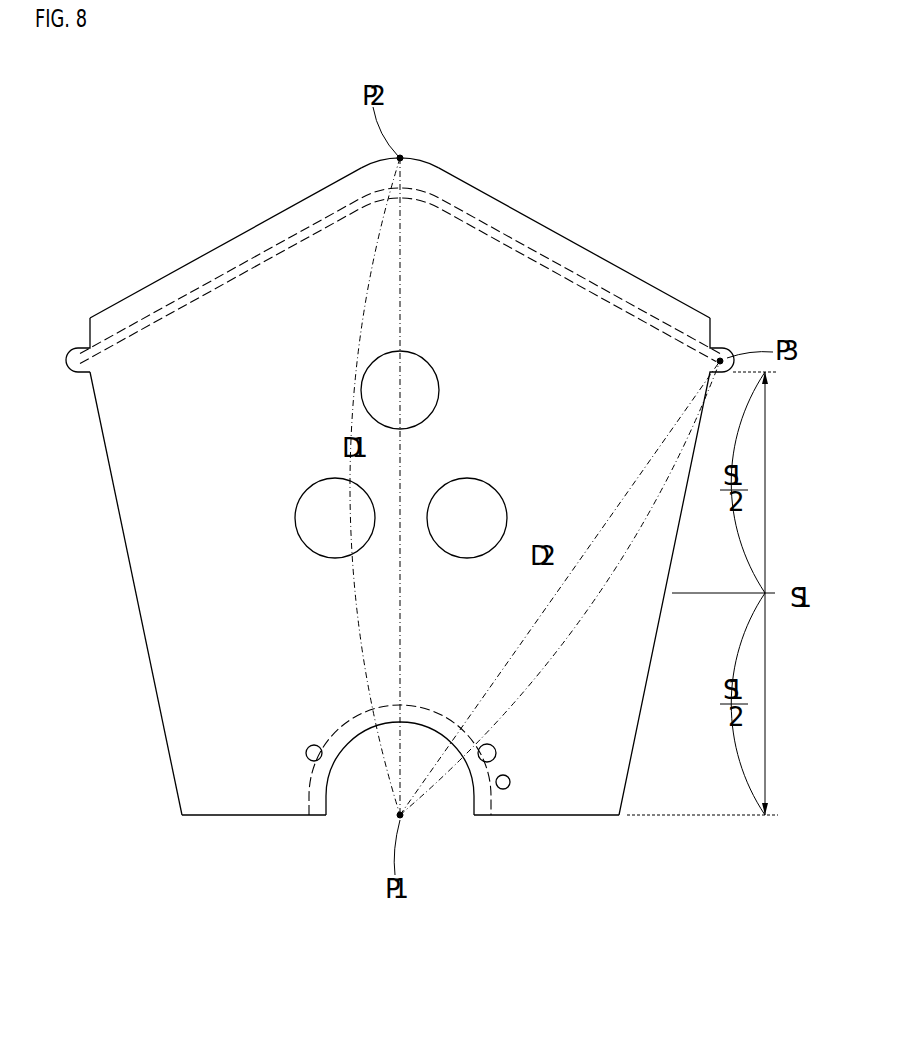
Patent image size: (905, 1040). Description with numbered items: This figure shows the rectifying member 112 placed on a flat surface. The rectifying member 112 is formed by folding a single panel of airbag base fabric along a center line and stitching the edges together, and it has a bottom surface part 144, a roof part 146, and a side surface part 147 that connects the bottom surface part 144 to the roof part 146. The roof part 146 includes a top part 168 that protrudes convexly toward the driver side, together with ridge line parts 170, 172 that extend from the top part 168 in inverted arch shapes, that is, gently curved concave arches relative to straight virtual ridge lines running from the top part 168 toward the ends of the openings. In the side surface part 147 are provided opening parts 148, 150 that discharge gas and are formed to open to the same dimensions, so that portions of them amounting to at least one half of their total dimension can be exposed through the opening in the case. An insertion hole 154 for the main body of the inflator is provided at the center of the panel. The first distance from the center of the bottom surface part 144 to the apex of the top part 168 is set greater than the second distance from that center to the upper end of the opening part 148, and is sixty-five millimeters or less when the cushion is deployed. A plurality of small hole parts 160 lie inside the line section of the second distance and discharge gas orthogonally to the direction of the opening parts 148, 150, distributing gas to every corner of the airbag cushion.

The rectifying member 112 is at (156, 135).
The bottom surface part 144 is at (268, 817).
The roof part 146 is at (183, 270).
The side surface part 147 is at (165, 572).
The opening part 148 is at (635, 740).
The opening part 150 is at (155, 680).
The insertion hole 154 is at (464, 795).
The small hole parts 160 is at (457, 486).
The top part 168 is at (436, 158).
The ridge line part 170 is at (592, 248).
The ridge line part 172 is at (276, 212).